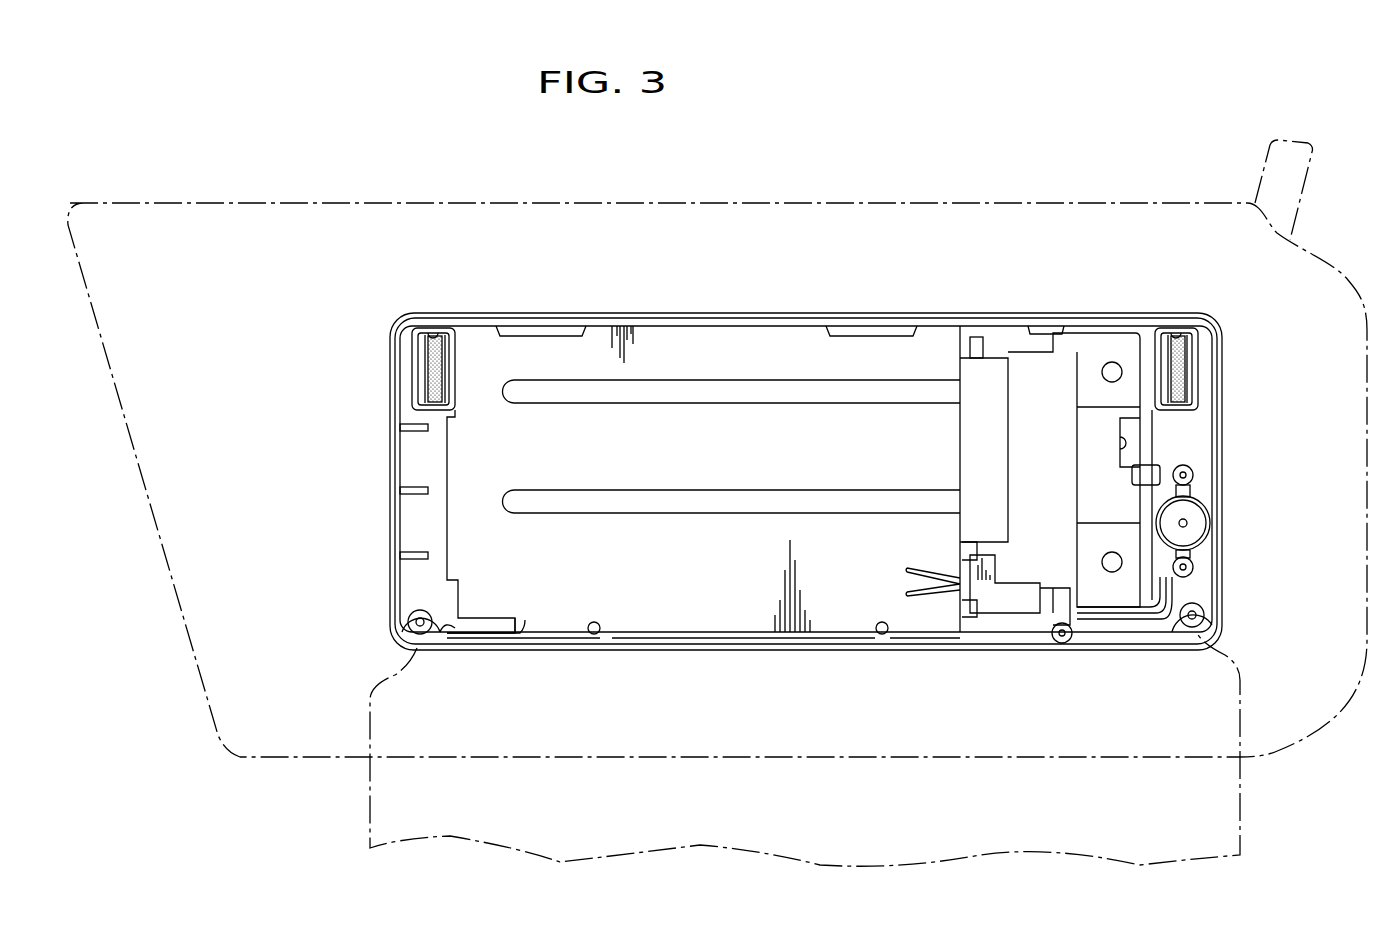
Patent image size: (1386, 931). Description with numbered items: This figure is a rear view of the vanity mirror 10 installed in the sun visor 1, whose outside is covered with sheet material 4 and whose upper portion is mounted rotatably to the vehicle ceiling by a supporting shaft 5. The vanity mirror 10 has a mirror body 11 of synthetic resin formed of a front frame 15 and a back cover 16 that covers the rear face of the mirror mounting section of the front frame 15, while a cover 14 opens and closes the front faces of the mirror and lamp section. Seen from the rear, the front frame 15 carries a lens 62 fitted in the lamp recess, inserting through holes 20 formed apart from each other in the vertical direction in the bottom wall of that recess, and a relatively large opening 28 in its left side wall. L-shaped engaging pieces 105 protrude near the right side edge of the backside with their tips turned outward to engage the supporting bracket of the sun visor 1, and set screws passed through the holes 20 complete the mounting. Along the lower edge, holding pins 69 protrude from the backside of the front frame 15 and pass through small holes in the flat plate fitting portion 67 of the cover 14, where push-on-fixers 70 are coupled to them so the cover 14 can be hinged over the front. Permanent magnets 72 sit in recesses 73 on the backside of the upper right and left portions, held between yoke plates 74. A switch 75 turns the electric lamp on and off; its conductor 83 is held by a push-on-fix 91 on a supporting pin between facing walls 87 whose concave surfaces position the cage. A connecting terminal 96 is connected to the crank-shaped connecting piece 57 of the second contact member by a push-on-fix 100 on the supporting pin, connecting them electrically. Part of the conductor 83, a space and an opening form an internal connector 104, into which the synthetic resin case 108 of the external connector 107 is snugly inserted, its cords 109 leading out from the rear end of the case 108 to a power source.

The sun visor 1 is at (1108, 168).
The sheet material 4 is at (891, 203).
The supporting shaft 5 is at (1300, 186).
The vanity mirror 10 is at (946, 288).
The mirror body 11 is at (395, 448).
The cover 14 is at (1240, 822).
The front frame 15 is at (490, 326).
The back cover 16 is at (755, 343).
The inserting through holes 20 is at (1112, 362).
The opening 28 is at (1122, 458).
The connecting piece 57 is at (1155, 470).
The lens 62 is at (1052, 326).
The fitting portion 67 is at (560, 634).
The holding pins 69 is at (408, 628).
The push-on-fixers 70 is at (410, 620).
The permanent magnets 72 is at (432, 393).
The recesses 73 is at (432, 333).
The yoke plates 74 is at (432, 380).
The switch 75 is at (1190, 535).
The conductor 83 is at (1210, 609).
The walls 87 is at (1205, 520).
The push-on-fix 91 is at (1195, 570).
The connecting terminal 96 is at (1195, 480).
The push-on-fix 100 is at (1195, 470).
The internal connector 104 is at (1045, 612).
The L-shaped engaging pieces 105 is at (428, 428).
The external connector 107 is at (995, 614).
The case 108 is at (1020, 598).
The cords 109 is at (905, 594).